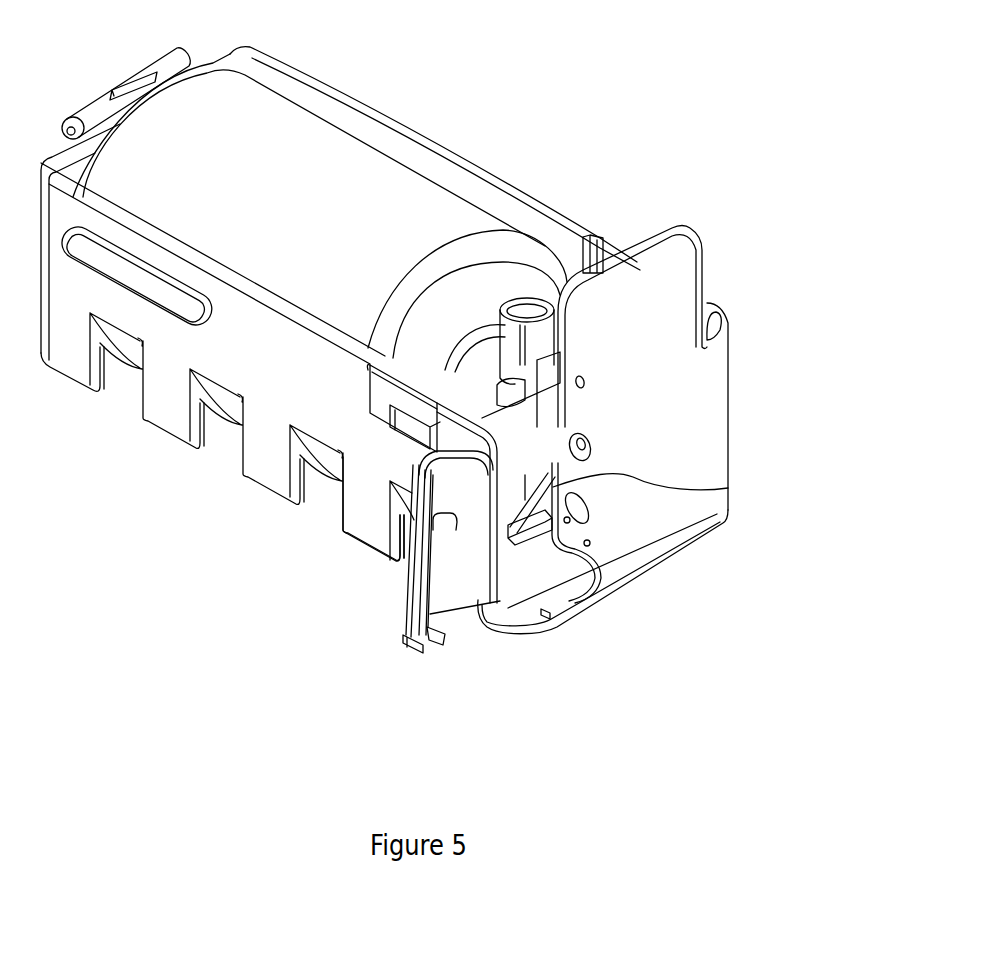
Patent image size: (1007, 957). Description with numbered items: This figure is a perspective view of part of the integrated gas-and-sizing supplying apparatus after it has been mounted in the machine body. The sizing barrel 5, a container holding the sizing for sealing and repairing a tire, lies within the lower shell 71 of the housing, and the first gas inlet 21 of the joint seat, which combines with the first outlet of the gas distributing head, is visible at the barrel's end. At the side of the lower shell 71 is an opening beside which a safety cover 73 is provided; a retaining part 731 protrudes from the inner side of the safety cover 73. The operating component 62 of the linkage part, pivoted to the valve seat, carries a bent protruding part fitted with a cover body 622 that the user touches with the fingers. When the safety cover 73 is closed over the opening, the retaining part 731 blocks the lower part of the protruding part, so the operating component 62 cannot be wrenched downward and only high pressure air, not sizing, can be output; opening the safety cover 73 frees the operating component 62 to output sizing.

The sizing barrel 5 is at (393, 183).
The first gas inlet 21 is at (531, 305).
The lower shell 71 is at (687, 412).
The operating component 62 is at (728, 488).
The cover body 622 is at (529, 537).
The safety cover 73 is at (413, 625).
The retaining part 731 is at (447, 533).